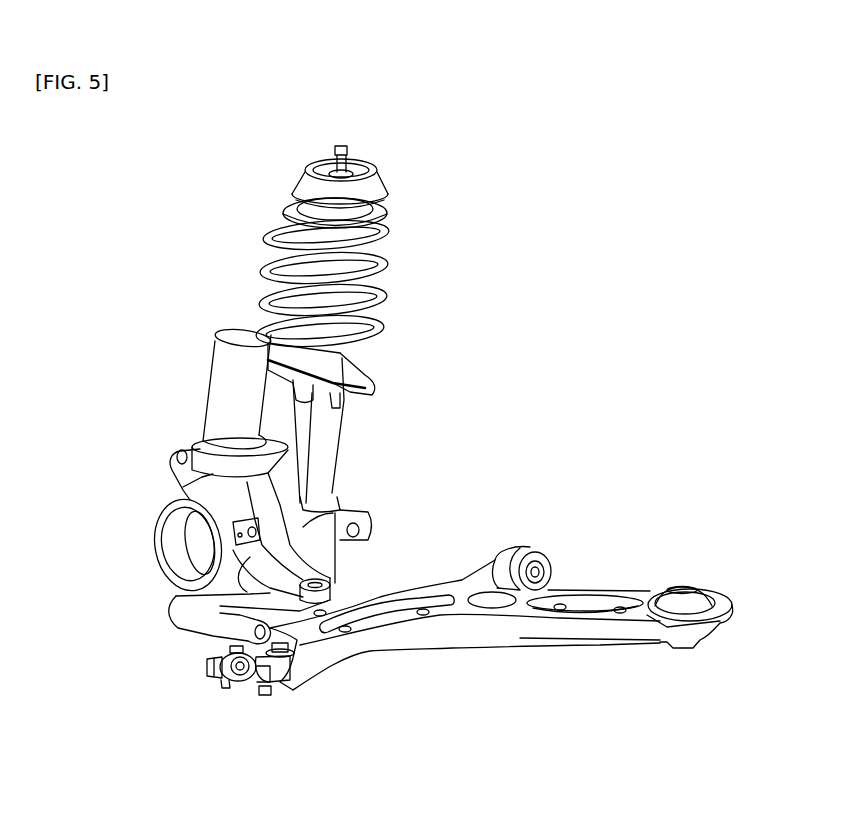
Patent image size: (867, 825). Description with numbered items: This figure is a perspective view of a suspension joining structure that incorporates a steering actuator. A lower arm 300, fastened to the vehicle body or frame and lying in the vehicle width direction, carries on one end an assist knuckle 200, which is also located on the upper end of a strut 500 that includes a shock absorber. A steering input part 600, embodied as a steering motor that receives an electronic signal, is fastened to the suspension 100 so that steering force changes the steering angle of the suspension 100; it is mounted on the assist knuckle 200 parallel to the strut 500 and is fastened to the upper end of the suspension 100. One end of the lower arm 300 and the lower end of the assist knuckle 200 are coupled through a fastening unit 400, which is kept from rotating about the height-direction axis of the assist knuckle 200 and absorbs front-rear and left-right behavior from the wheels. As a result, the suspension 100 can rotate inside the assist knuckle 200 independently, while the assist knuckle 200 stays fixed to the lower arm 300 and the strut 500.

The suspension 100 is at (158, 529).
The assist knuckle 200 is at (347, 515).
The lower arm 300 is at (482, 628).
The fastening unit 400 is at (207, 668).
The strut 500 is at (388, 262).
The steering input part 600 is at (211, 373).